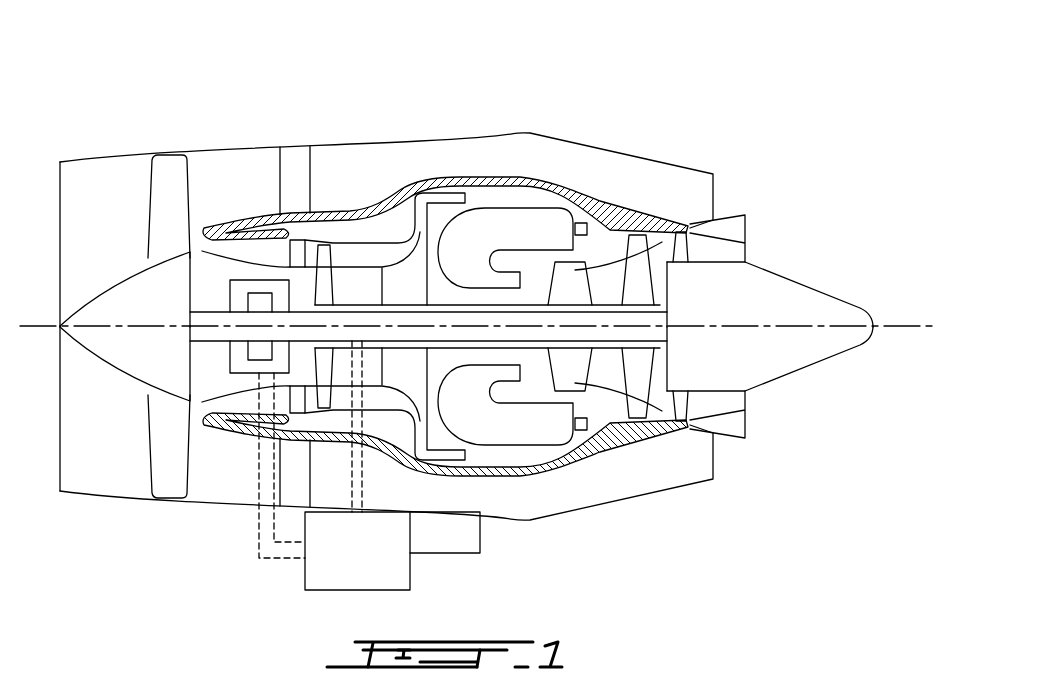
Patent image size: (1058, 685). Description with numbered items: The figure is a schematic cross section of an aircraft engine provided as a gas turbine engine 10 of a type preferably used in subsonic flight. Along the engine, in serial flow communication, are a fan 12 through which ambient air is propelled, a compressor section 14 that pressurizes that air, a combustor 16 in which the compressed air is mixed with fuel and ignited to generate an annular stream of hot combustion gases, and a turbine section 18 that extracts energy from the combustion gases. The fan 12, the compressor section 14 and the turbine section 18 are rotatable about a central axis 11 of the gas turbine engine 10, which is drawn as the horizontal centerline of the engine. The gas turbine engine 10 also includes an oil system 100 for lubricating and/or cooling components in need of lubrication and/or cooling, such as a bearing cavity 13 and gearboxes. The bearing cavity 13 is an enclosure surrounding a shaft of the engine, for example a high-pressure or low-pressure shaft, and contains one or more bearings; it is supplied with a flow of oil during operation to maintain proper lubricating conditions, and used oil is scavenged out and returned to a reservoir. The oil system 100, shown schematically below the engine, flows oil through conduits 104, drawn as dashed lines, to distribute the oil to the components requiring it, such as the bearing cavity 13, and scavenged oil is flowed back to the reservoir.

The gas turbine engine 10 is at (622, 108).
The central axis 11 is at (900, 326).
The fan 12 is at (167, 438).
The bearing cavity 13 is at (242, 356).
The compressor section 14 is at (350, 260).
The combustor 16 is at (507, 222).
The turbine section 18 is at (602, 370).
The oil system 100 is at (278, 565).
The conduits 104 is at (257, 522).